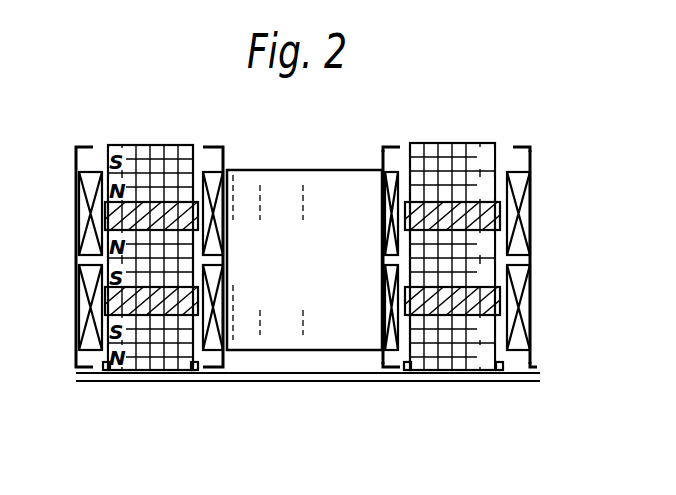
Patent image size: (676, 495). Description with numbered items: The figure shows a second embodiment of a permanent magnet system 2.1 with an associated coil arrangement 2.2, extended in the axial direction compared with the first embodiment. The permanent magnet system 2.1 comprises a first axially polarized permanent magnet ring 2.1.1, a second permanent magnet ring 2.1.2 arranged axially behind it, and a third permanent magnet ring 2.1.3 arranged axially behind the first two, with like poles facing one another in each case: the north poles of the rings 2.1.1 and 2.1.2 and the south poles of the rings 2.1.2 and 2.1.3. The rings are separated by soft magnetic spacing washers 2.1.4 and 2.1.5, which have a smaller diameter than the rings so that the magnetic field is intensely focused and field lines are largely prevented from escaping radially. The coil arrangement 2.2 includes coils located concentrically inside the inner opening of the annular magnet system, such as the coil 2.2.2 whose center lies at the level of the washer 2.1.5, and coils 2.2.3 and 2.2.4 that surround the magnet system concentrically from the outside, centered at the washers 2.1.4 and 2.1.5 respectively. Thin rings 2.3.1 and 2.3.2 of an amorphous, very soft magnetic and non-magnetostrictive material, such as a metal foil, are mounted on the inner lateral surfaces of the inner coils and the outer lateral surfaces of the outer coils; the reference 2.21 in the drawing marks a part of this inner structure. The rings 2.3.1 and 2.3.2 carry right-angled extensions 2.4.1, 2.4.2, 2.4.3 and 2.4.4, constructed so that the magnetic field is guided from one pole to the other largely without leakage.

The permanent magnet system 2.1 is at (506, 289).
The first axially polarized permanent magnet ring 2.1.1 is at (497, 167).
The second permanent magnet ring 2.1.2 is at (500, 253).
The third permanent magnet ring 2.1.3 is at (465, 362).
The soft magnetic spacing washer 2.1.4 is at (497, 213).
The soft magnetic spacing washer 2.1.5 is at (497, 303).
The coil arrangement 2.2 is at (87, 370).
The yoke plate 2.21 is at (382, 190).
The coil 2.2.2 is at (396, 368).
The coil 2.2.3 is at (530, 178).
The coil 2.2.4 is at (528, 337).
The thin ring 2.3.1 is at (382, 303).
The thin ring 2.3.2 is at (530, 352).
The right-angled extension 2.4.1 is at (397, 147).
The right-angled extension 2.4.2 is at (387, 368).
The right-angled extension 2.4.3 is at (517, 148).
The right-angled extension 2.4.4 is at (517, 383).